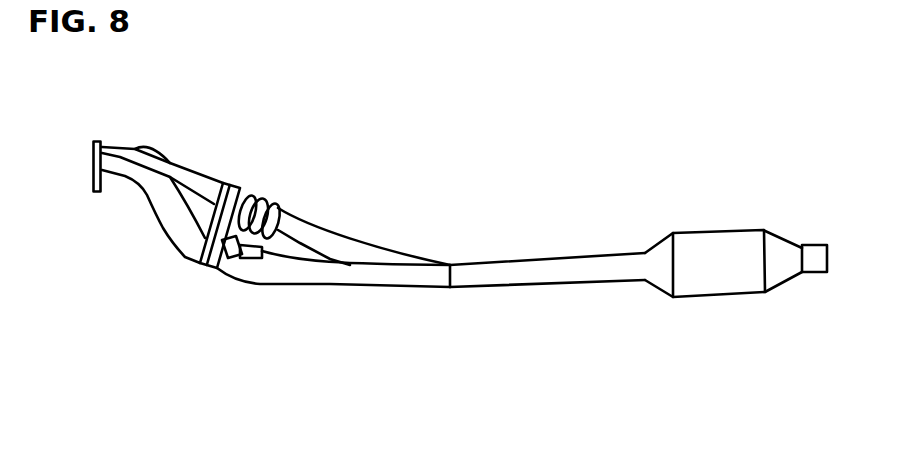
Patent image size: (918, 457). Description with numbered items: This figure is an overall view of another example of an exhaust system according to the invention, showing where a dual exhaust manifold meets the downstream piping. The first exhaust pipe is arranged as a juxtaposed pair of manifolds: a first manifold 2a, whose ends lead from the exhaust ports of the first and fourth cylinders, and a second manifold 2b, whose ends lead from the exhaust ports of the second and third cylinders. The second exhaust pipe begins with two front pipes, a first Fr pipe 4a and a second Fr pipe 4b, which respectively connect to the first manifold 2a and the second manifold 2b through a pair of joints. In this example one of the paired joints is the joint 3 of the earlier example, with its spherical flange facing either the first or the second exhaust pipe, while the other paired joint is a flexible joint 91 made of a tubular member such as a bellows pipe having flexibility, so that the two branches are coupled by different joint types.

The first manifold 2a is at (197, 172).
The second manifold 2b is at (160, 226).
The flexible joint 91 is at (266, 195).
The Fr pipe 4a is at (368, 250).
The Fr pipe 4b is at (363, 278).
The joint 3 is at (227, 263).